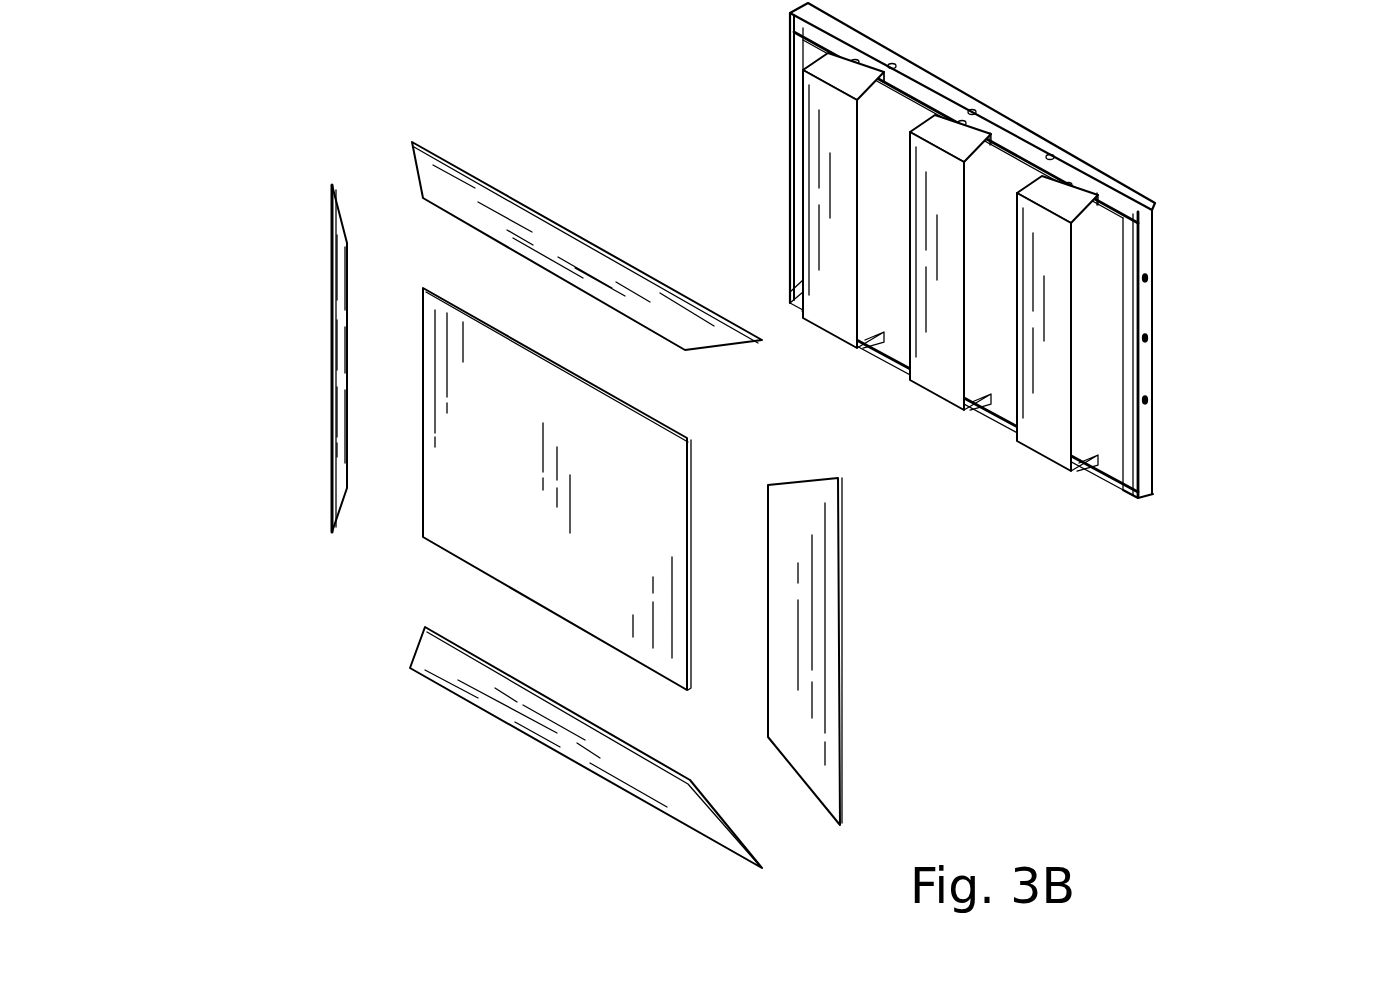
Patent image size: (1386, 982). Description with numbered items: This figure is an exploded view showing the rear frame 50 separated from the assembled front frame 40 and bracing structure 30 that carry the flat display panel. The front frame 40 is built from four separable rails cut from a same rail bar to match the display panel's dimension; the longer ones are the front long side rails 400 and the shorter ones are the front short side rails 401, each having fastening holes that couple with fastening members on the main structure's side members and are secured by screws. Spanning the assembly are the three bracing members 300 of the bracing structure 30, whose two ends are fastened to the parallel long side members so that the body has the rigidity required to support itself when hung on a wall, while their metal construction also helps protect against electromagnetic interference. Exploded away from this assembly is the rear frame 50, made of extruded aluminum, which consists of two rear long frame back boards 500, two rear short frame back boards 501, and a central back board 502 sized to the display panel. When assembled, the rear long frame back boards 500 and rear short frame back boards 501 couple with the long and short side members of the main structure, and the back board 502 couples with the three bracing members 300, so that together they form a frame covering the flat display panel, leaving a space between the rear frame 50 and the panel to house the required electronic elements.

The bracing structure 30 is at (1033, 340).
The bracing member 300 is at (830, 335).
The front frame 40 is at (1071, 250).
The front long side rail 400 is at (1017, 130).
The front short side rail 401 is at (1152, 253).
The rear frame 50 is at (589, 458).
The rear long frame back board 500 is at (415, 170).
The rear short frame back board 501 is at (328, 292).
The back board 502 is at (687, 437).